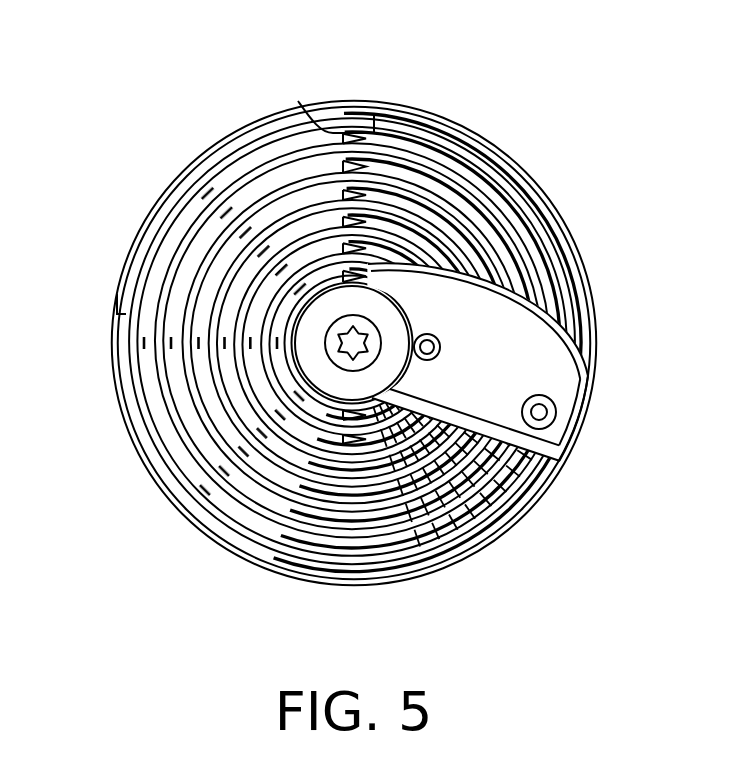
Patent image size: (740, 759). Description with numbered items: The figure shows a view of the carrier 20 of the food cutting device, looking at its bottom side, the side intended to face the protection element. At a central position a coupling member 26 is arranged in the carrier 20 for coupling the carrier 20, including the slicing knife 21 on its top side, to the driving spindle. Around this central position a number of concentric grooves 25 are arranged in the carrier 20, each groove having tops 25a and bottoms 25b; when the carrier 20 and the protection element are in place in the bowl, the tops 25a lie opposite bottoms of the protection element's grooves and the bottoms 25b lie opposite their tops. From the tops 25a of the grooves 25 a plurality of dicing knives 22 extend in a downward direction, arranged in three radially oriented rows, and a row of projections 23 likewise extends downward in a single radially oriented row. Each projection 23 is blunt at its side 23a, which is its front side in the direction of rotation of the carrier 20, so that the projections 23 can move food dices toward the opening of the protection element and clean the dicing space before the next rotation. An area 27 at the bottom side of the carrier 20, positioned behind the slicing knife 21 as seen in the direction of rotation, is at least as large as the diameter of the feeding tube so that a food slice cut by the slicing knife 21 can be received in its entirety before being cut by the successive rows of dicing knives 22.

The carrier 20 is at (172, 219).
The slicing knife 21 is at (497, 390).
The dicing knives 22 is at (128, 345).
The projections 23 is at (368, 161).
The side of the projections 23a is at (320, 118).
The concentric grooves 25 is at (182, 441).
The tops of the grooves 25a is at (486, 512).
The bottoms of the grooves 25b is at (548, 486).
The coupling member 26 is at (365, 343).
The area 27 is at (457, 492).